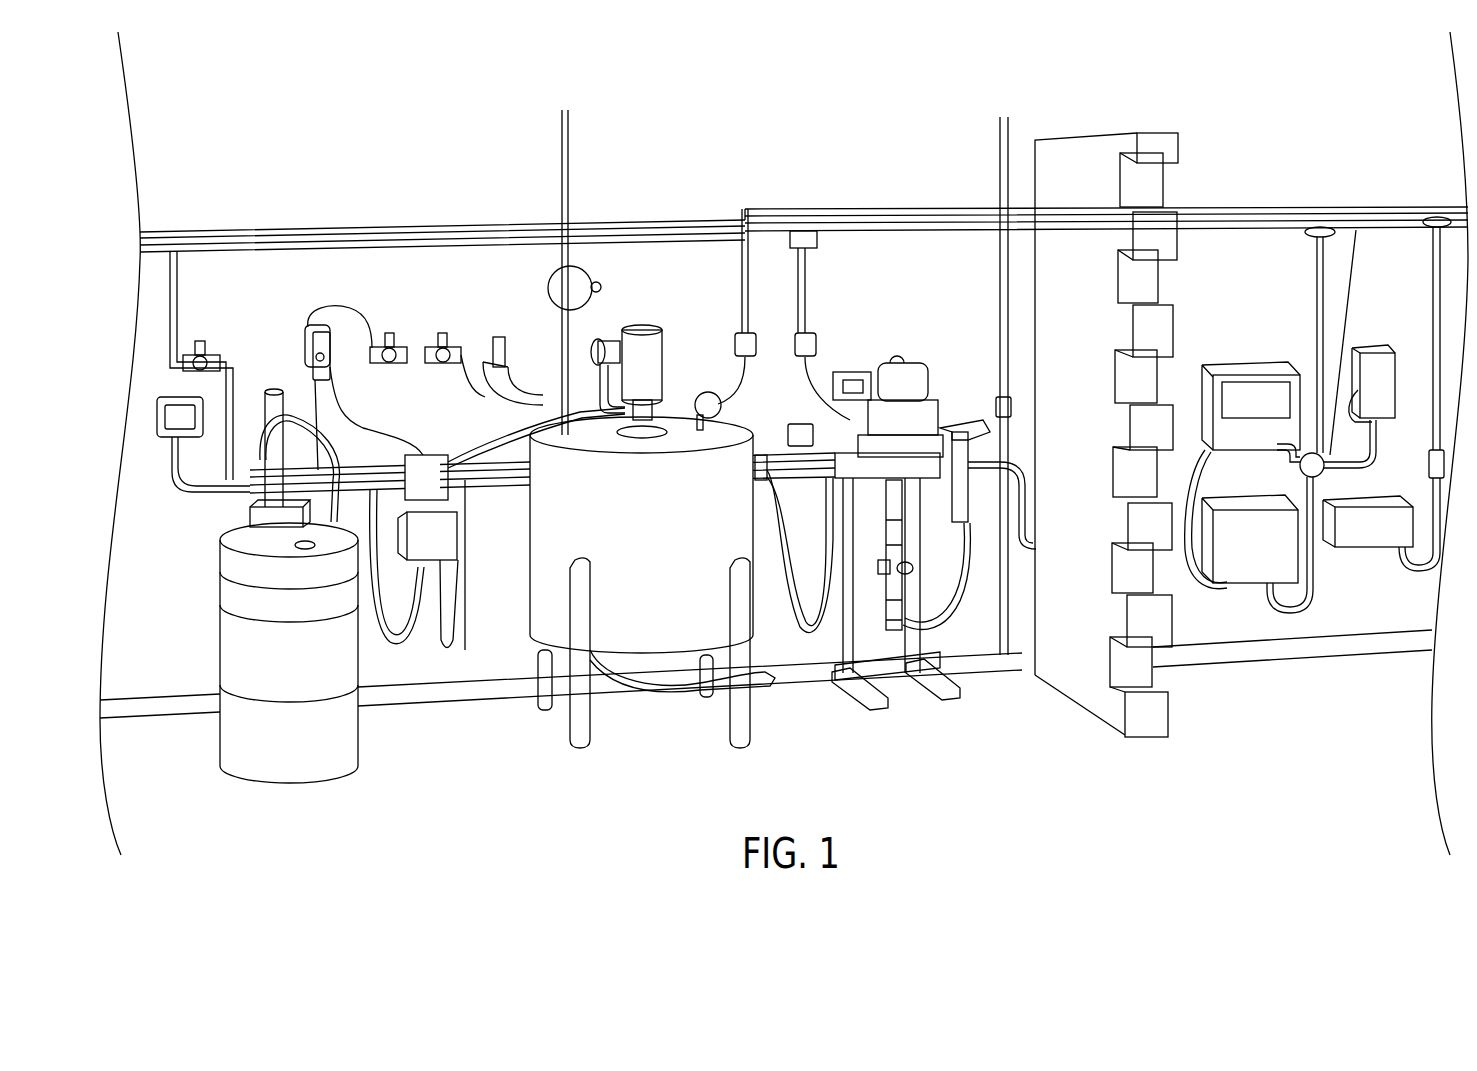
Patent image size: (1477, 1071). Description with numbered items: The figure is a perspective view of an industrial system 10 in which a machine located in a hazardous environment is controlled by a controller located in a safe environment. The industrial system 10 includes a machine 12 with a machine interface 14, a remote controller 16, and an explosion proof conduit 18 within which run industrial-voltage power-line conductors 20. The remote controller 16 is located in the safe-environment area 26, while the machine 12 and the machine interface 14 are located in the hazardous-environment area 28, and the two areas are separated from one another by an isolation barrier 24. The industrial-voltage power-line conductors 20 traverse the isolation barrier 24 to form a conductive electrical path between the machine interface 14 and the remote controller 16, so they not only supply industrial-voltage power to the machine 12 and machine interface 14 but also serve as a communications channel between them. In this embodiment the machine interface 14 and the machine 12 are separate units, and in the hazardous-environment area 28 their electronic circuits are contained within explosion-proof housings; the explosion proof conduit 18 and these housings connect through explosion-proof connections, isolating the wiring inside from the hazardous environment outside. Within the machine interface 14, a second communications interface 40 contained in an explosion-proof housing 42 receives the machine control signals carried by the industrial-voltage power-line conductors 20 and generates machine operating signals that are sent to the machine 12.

The industrial system 10 is at (931, 178).
The machine 12 is at (895, 497).
The machine interface 14 is at (842, 355).
The remote controller 16 is at (1254, 348).
The explosion proof conduit 18 is at (798, 222).
The industrial-voltage power-line conductors 20 is at (1340, 380).
The isolation barrier 24 is at (1094, 255).
The safe-environment area 26 is at (1205, 714).
The hazardous-environment area 28 is at (260, 206).
The second communications interface 40 is at (936, 437).
The explosion-proof housing 42 is at (900, 364).